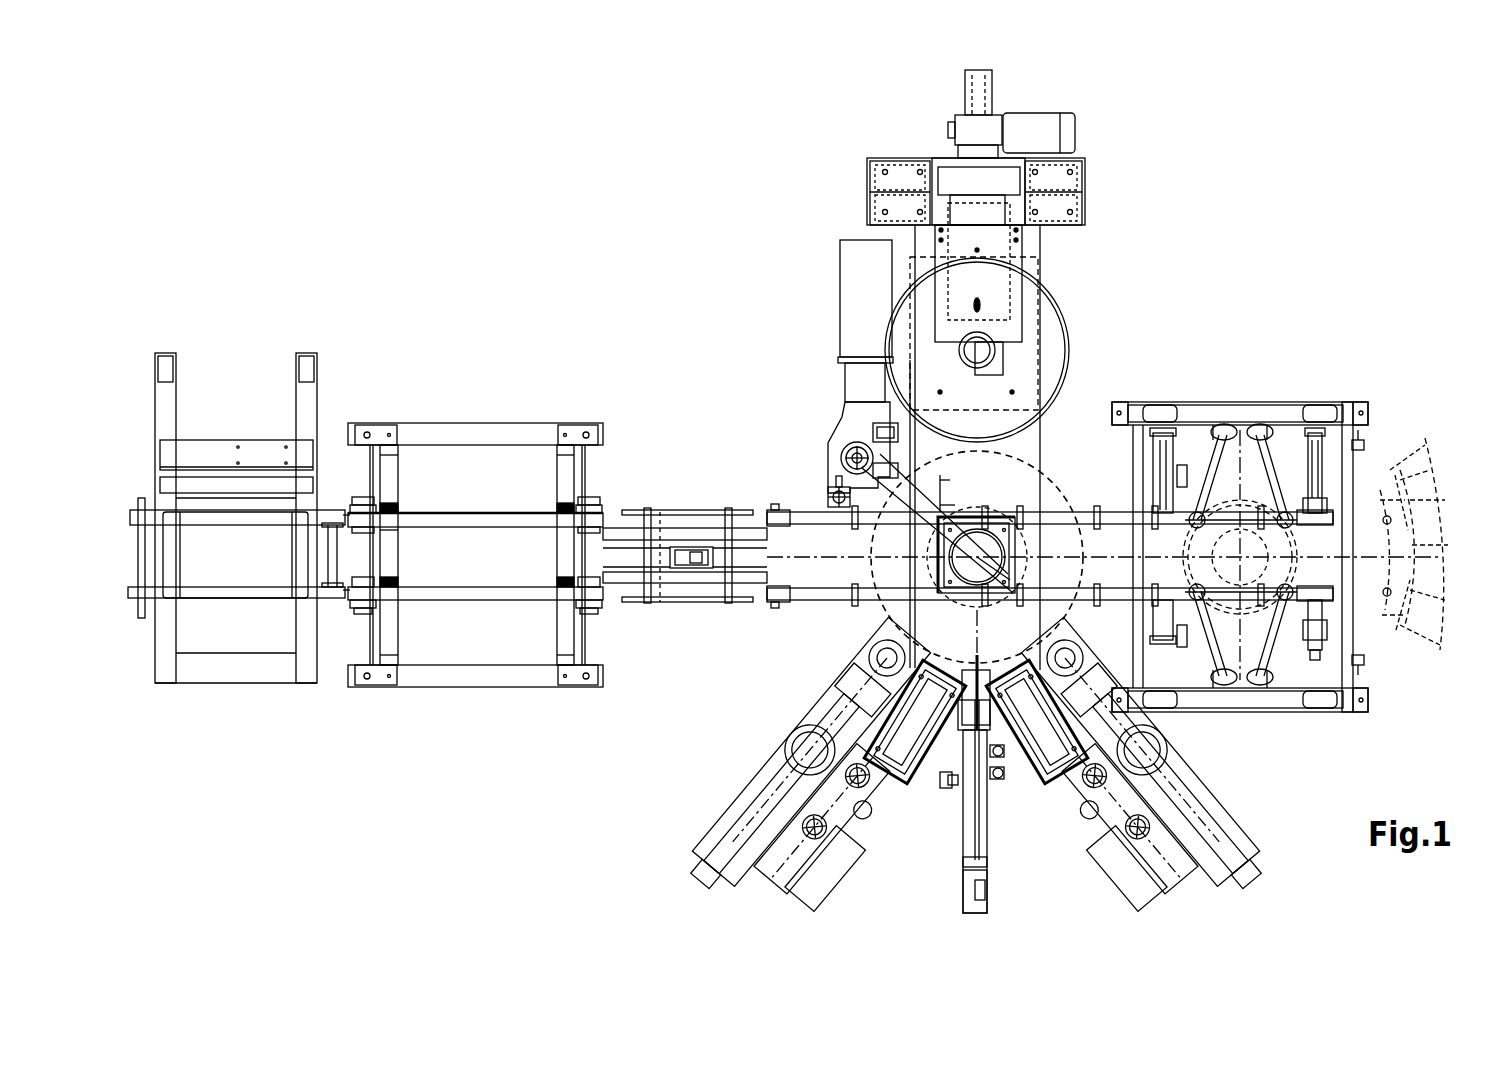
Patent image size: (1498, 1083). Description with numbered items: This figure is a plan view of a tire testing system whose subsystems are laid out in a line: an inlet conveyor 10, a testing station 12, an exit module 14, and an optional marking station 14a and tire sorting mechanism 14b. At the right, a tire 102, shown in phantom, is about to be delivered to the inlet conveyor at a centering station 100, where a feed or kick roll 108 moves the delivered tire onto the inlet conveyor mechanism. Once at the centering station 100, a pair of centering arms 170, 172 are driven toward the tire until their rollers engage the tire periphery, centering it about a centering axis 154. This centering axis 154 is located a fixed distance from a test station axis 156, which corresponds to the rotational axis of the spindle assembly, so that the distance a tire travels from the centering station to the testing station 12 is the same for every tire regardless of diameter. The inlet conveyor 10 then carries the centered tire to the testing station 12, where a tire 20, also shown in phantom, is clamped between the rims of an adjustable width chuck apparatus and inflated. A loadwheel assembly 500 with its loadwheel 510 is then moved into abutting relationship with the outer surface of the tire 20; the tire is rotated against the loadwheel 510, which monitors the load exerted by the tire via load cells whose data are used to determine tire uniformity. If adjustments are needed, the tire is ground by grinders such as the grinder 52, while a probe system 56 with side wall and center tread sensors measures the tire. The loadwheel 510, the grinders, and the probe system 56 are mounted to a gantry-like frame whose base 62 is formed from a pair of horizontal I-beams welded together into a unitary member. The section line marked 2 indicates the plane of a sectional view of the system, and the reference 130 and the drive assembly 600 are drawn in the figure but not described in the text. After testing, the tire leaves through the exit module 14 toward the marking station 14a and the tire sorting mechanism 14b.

The section line 2- 2 is at (528, 555).
The inlet conveyor 10 is at (1385, 445).
The testing station 12 is at (760, 653).
The exit module 14 is at (484, 254).
The marking station 14a is at (586, 422).
The tire sorting mechanism 14b is at (324, 411).
The tire 20 is at (886, 611).
The grinder 52 is at (703, 817).
The probe system 56 is at (916, 857).
The base 62 is at (1019, 492).
The centering station 100 is at (1293, 653).
The tire 102 is at (1398, 462).
The kick roll 108 is at (1358, 655).
The cylinder 130 is at (1322, 506).
The centering axis 154 is at (1225, 600).
The test station axis 156 is at (978, 557).
The centering arm 170 is at (1241, 560).
The centering arm 172 is at (1248, 485).
The loadwheel assembly 500 is at (1117, 322).
The loadwheel 510 is at (1050, 327).
The drive assembly 600 is at (1037, 81).